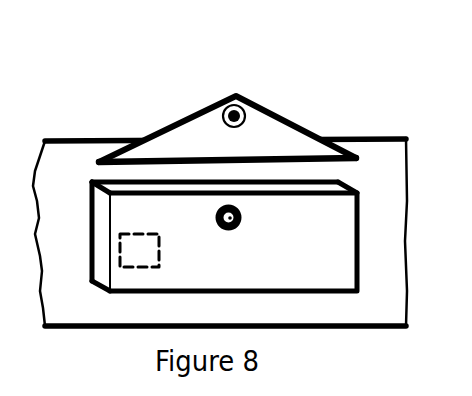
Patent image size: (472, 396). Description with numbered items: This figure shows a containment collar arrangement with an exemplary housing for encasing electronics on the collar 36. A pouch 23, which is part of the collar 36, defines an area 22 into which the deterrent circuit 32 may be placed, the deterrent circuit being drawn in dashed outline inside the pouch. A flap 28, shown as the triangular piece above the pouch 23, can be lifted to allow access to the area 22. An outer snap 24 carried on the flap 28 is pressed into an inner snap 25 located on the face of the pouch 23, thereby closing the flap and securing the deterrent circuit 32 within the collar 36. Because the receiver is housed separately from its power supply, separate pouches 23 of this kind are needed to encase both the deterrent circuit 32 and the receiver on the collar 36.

The area 22 is at (108, 184).
The pouch 23 is at (333, 224).
The outer snap 24 is at (220, 103).
The inner snap 25 is at (232, 230).
The flap 28 is at (258, 130).
The deterrent circuit 32 is at (158, 255).
The collar 36 is at (377, 138).